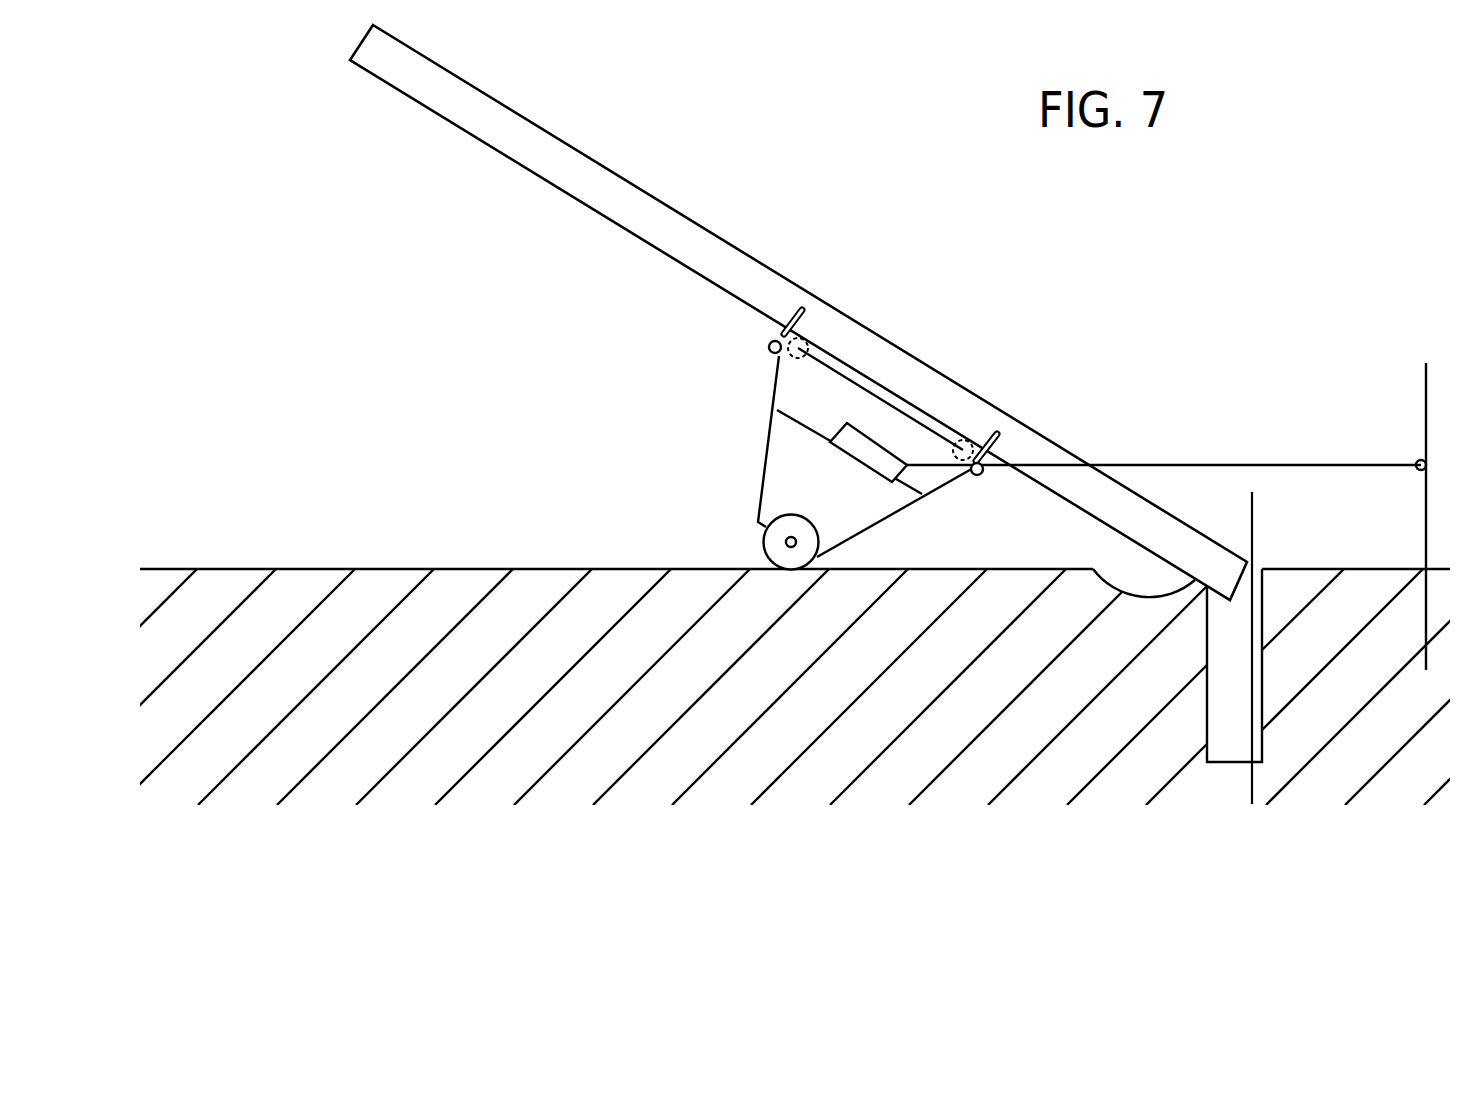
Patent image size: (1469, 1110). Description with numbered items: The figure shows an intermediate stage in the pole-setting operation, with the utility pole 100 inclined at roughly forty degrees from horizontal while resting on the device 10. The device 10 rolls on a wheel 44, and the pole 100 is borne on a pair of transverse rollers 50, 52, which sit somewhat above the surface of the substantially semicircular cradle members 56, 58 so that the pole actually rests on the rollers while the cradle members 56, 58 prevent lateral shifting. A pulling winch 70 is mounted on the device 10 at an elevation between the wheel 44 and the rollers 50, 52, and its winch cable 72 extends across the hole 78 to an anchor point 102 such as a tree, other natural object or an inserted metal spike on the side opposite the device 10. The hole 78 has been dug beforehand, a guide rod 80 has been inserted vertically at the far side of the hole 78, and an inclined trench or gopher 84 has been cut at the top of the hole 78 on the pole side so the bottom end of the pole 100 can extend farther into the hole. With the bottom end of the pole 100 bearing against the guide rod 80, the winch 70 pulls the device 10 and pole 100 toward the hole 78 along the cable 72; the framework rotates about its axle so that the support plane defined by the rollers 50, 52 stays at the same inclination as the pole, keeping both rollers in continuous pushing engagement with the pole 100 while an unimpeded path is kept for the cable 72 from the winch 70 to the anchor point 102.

The device 10 is at (632, 458).
The wheel 44 is at (765, 542).
The transverse roller 50 is at (985, 455).
The transverse roller 52 is at (777, 355).
The cradle member 56 is at (998, 441).
The cradle member 58 is at (800, 310).
The pulling winch 70 is at (863, 453).
The winch cable 72 is at (1237, 465).
The hole 78 is at (1230, 763).
The guide rod 80 is at (1253, 538).
The gopher 84 is at (1093, 568).
The utility pole 100 is at (682, 235).
The anchor point 102 is at (1425, 410).